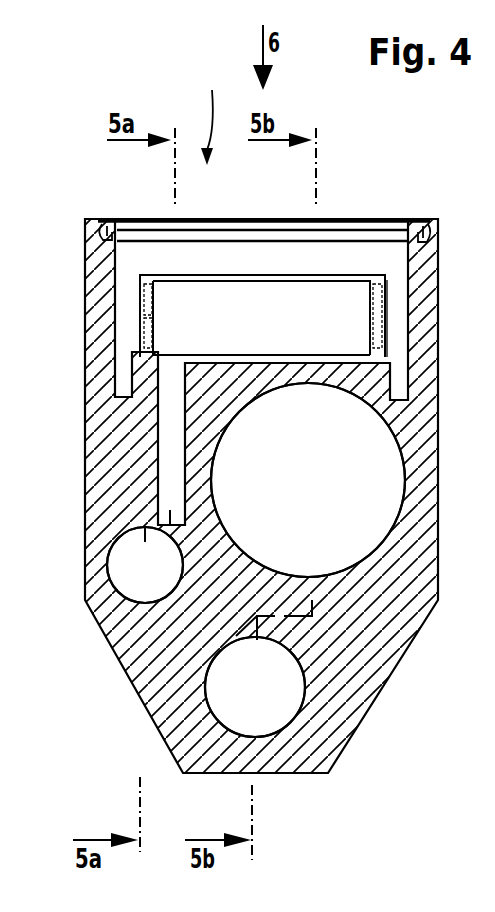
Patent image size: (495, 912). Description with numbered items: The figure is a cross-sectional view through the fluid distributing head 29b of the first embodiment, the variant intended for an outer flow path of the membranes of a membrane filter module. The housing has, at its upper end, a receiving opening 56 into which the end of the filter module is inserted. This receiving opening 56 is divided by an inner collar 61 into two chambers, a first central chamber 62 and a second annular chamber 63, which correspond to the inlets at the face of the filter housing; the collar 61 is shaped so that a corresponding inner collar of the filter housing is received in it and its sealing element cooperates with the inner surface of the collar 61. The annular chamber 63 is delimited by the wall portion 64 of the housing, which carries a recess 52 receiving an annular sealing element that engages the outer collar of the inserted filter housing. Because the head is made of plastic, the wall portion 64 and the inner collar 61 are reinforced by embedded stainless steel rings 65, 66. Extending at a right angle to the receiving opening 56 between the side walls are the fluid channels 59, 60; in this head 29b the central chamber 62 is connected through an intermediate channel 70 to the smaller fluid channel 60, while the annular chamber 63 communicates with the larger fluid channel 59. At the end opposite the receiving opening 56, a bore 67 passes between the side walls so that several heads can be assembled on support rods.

The fluid distributing head 29b is at (200, 112).
The recess 52 is at (126, 218).
The receiving opening 56 is at (263, 262).
The fluid channel 59 is at (380, 486).
The fluid channel 60 is at (120, 560).
The collar 61 is at (148, 336).
The first central chamber 62 is at (336, 293).
The second annular chamber 63 is at (393, 312).
The wall portion 64 is at (417, 338).
The stainless steel ring 65 is at (148, 297).
The stainless steel ring 66 is at (428, 240).
The bore 67 is at (283, 713).
The intermediate channel 70 is at (160, 470).